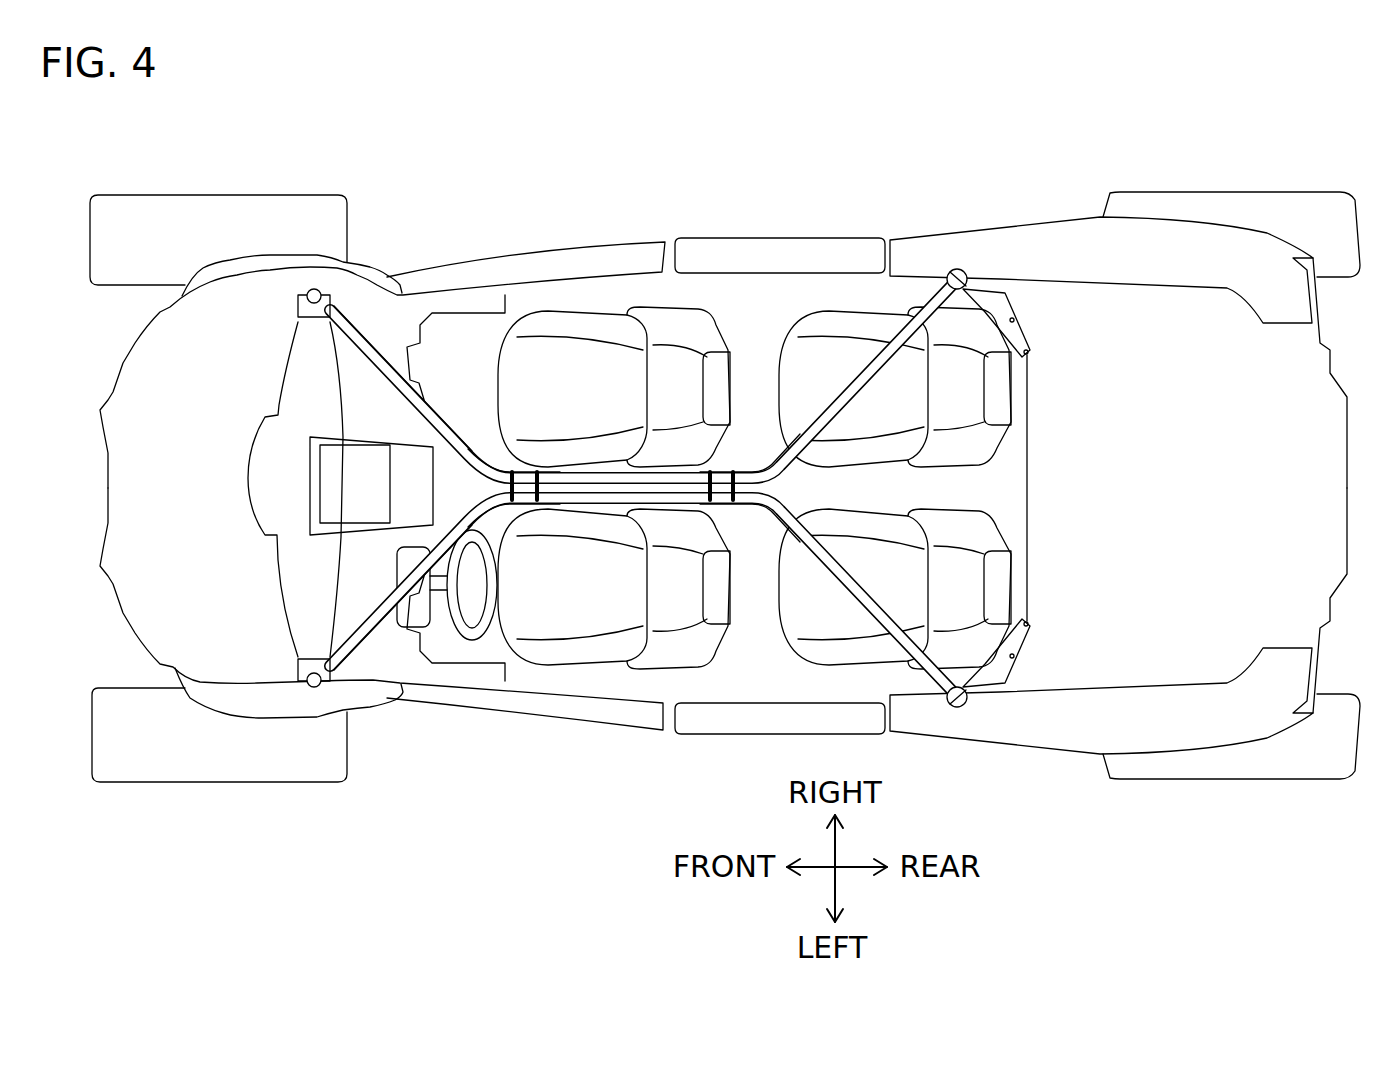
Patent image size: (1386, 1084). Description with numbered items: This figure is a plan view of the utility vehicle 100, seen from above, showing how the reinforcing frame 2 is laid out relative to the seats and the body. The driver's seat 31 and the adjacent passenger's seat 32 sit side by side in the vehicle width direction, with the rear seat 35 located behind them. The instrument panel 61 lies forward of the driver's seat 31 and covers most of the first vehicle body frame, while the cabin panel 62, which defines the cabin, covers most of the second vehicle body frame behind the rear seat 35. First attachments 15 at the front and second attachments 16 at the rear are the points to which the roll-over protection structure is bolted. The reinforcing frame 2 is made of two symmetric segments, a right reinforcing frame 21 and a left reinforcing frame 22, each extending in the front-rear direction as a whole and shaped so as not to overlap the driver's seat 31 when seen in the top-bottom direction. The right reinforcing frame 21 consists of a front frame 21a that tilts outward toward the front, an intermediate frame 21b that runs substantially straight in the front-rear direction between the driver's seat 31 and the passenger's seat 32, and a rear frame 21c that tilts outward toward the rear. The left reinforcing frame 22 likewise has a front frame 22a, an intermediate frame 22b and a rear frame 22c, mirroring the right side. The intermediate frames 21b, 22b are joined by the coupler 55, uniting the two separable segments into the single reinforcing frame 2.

The vehicle 100 is at (750, 200).
The reinforcing frame 2 is at (631, 483).
The right reinforcing frame 21 is at (643, 338).
The front frame 21a is at (430, 400).
The intermediate frame 21b is at (513, 463).
The rear frame 21c is at (783, 455).
The left reinforcing frame 22 is at (643, 621).
The front frame 22a is at (403, 618).
The intermediate frame 22b is at (723, 503).
The rear frame 22c is at (790, 505).
The first attachments 15 is at (302, 298).
The second attachments 16 is at (968, 275).
The driver's seat 31 is at (567, 665).
The passenger's seat 32 is at (593, 300).
The rear seat 35 is at (1012, 388).
The coupler 55 is at (707, 505).
The instrument panel 61 is at (273, 417).
The cabin panel 62 is at (1168, 499).